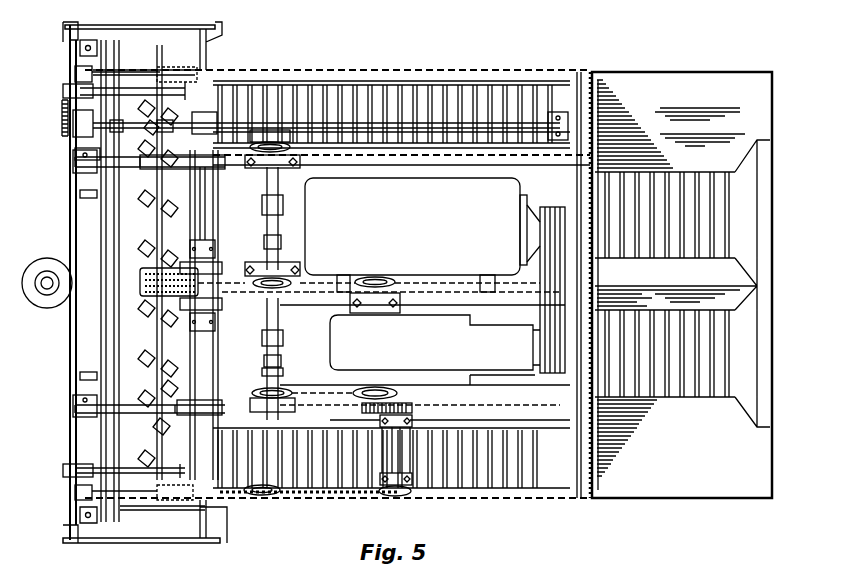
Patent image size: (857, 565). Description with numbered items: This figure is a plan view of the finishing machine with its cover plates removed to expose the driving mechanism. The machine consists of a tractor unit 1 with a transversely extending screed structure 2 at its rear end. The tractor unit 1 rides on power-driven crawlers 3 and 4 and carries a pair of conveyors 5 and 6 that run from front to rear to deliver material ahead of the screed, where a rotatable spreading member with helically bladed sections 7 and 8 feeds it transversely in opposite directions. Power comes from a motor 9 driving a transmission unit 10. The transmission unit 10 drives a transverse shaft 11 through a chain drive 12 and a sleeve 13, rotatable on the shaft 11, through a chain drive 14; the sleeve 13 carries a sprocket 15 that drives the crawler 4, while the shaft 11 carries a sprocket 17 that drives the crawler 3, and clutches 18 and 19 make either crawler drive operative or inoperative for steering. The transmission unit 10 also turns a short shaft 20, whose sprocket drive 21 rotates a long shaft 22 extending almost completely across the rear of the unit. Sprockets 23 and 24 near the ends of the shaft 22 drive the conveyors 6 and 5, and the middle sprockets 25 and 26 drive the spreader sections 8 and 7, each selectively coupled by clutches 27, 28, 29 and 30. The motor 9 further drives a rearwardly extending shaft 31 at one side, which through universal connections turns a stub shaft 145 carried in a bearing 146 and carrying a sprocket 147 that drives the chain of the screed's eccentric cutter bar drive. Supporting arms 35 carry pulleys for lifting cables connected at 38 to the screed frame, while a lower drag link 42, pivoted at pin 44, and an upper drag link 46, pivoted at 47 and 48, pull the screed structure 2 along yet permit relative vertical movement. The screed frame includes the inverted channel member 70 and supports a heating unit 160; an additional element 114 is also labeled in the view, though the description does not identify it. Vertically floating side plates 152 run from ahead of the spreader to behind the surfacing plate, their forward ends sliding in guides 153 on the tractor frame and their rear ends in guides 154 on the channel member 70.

The tractor unit 1 is at (566, 507).
The screed structure 2 is at (64, 348).
The crawler 3 is at (478, 486).
The crawler 4 is at (410, 88).
The conveyor 5 is at (718, 208).
The conveyor 6 is at (718, 339).
The spreading member section 7 is at (153, 210).
The spreading member section 8 is at (153, 342).
The motor 9 is at (422, 226).
The transmission unit 10 is at (432, 350).
The transverse shaft 11 is at (278, 232).
The chain drive 12 is at (304, 282).
The sleeve 13 is at (280, 331).
The chain drive 14 is at (340, 390).
The sprocket 15 is at (290, 400).
The sprocket 17 is at (300, 152).
The clutch 18 is at (255, 492).
The clutch 19 is at (237, 160).
The short shaft 20 is at (400, 455).
The sprocket drive 21 is at (314, 498).
The shaft 22 is at (208, 216).
The sprocket 23 is at (192, 424).
The sprocket 24 is at (200, 169).
The sprocket 25 is at (192, 302).
The sprocket 26 is at (192, 262).
The clutch 27 is at (212, 400).
The clutch 28 is at (208, 200).
The clutch 29 is at (210, 303).
The clutch 30 is at (210, 266).
The rearwardly extending shaft 31 is at (522, 132).
The supporting arm 35 is at (130, 167).
The cable connection 38 is at (73, 177).
The lower drag link 42 is at (136, 69).
The pin 44 is at (75, 72).
The upper drag link 46 is at (148, 90).
The pivot 47 is at (190, 127).
The pivot 48 is at (70, 92).
The inverted channel member 70 is at (75, 213).
The paddle 114 is at (152, 128).
The stub shaft 145 is at (95, 126).
The bearing 146 is at (75, 156).
The sprocket 147 is at (62, 120).
The side plate 152 is at (170, 25).
The guide 153 is at (222, 27).
The guide 154 is at (68, 28).
The heating unit 160 is at (47, 268).